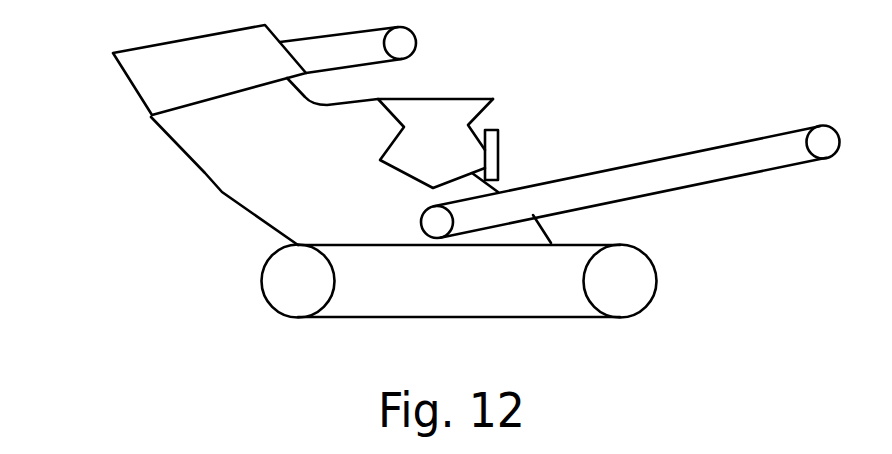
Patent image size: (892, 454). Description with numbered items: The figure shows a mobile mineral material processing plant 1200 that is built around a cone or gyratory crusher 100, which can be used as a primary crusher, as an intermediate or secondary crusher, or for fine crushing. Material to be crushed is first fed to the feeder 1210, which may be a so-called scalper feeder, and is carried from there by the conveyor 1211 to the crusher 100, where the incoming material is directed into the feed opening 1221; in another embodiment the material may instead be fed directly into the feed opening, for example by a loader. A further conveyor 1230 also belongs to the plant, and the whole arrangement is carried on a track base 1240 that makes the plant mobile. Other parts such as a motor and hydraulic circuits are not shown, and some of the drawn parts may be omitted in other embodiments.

The crusher 100 is at (410, 178).
The mineral material processing plant 1200 is at (222, 193).
The feeder 1210 is at (120, 68).
The conveyor 1211 is at (320, 73).
The feed opening 1221 is at (493, 98).
The conveyor 1230 is at (787, 131).
The track base 1240 is at (562, 318).